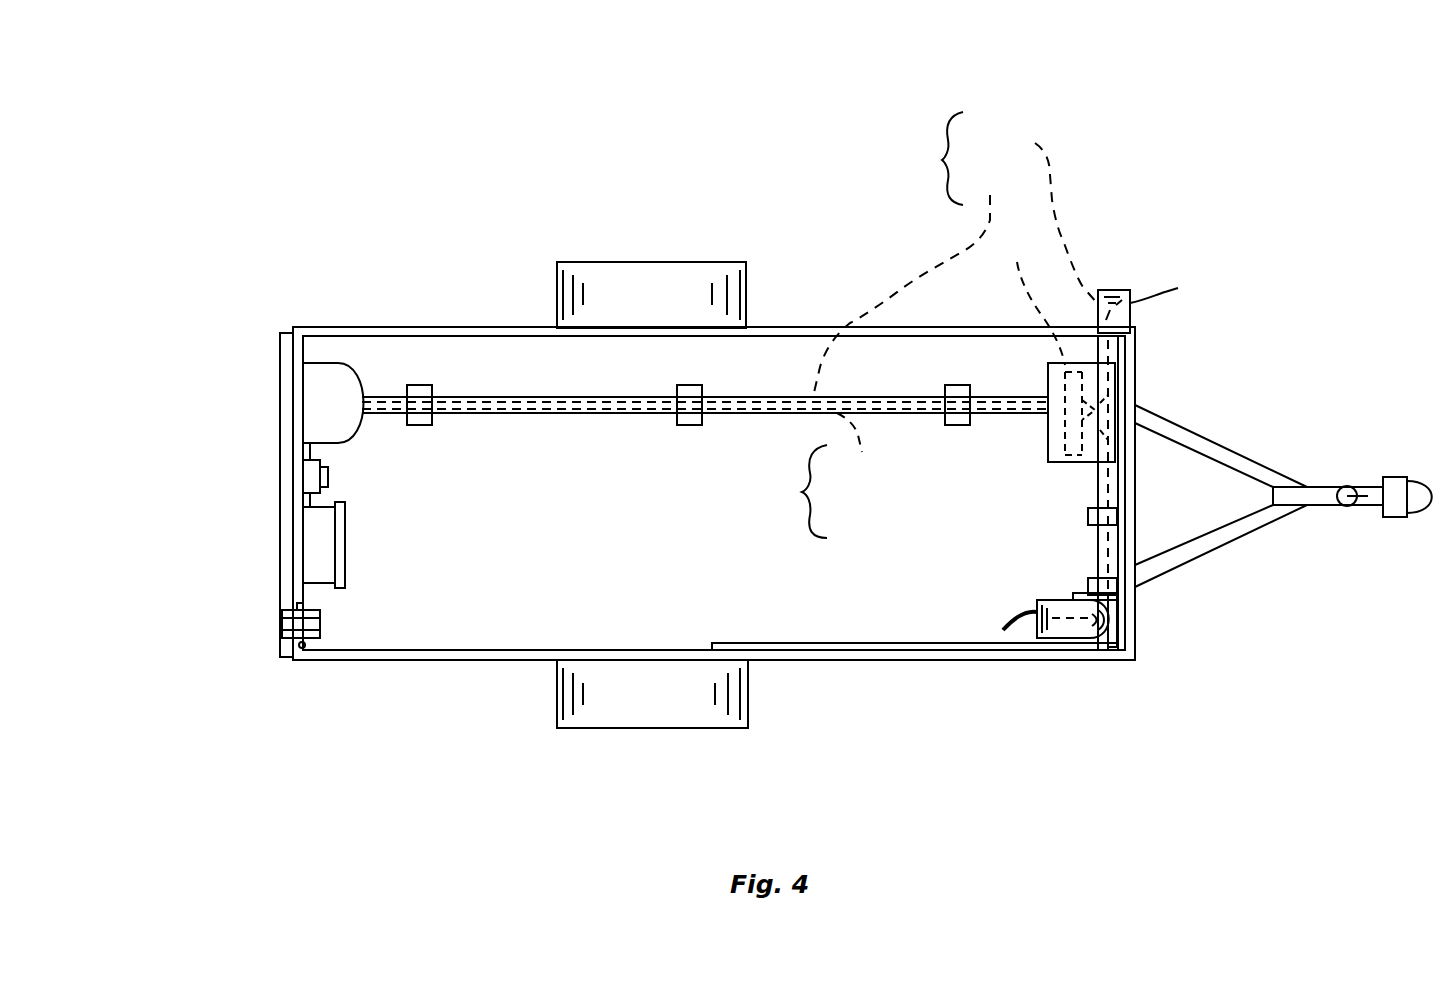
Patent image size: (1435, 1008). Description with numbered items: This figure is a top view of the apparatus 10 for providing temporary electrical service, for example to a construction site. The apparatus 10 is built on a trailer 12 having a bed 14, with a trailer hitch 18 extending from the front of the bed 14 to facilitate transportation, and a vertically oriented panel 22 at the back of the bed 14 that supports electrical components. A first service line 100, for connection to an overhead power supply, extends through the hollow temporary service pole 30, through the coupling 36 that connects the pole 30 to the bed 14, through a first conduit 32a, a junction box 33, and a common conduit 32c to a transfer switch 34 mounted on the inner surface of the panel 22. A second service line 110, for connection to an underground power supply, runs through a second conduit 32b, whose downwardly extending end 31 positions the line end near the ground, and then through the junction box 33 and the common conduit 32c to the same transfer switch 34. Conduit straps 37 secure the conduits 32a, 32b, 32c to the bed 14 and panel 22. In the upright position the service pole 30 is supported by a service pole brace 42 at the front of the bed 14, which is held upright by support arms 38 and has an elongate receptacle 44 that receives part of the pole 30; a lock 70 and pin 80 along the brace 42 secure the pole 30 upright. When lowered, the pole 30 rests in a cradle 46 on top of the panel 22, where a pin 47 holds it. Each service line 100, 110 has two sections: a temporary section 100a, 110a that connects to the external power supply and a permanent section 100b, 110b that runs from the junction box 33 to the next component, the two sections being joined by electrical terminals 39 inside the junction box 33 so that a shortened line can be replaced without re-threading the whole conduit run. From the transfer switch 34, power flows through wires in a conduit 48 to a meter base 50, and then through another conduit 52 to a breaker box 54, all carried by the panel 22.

The apparatus 10 is at (181, 161).
The trailer 12 is at (1003, 663).
The bed 14 is at (462, 622).
The trailer hitch 18 is at (1380, 500).
The panel 22 is at (296, 393).
The temporary service pole 30 is at (1107, 648).
The end of second conduit 31 is at (1115, 300).
The first conduit 32a is at (1120, 558).
The second conduit 32b is at (1112, 345).
The common conduit 32c is at (897, 400).
The junction box 33 is at (1102, 420).
The transfer switch 34 is at (332, 380).
The coupling 36 is at (1120, 588).
The conduit straps 37 is at (420, 400).
The support arms 38 is at (843, 646).
The electrical terminals 39 is at (1036, 302).
The service pole brace 42 is at (1122, 618).
The elongate receptacle 44 is at (1122, 635).
The cradle 46 is at (288, 622).
The pin 47 is at (288, 611).
The conduit 48 is at (304, 452).
The meter base 50 is at (315, 478).
The conduit 52 is at (310, 500).
The breaker box 54 is at (318, 550).
The lock 70 is at (1052, 590).
The pin 80 is at (1077, 648).
The first service line 100 is at (790, 491).
The temporary section 100a is at (1088, 538).
The permanent section 100b is at (867, 451).
The second service line 110 is at (926, 158).
The temporary section 110a is at (1032, 215).
The permanent section 110b is at (925, 283).